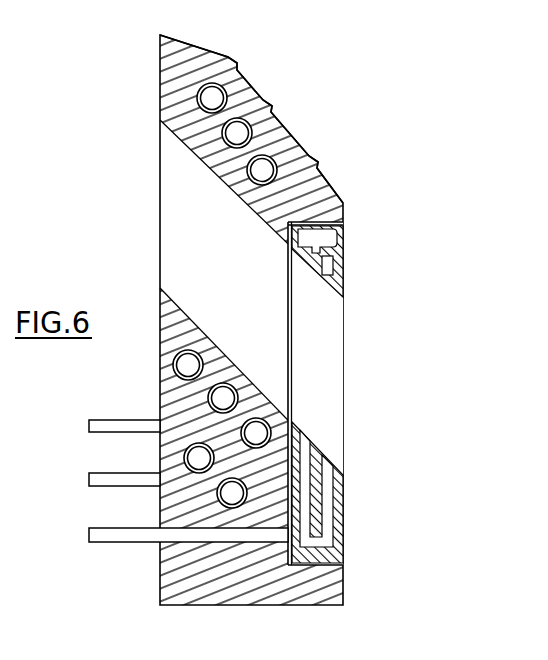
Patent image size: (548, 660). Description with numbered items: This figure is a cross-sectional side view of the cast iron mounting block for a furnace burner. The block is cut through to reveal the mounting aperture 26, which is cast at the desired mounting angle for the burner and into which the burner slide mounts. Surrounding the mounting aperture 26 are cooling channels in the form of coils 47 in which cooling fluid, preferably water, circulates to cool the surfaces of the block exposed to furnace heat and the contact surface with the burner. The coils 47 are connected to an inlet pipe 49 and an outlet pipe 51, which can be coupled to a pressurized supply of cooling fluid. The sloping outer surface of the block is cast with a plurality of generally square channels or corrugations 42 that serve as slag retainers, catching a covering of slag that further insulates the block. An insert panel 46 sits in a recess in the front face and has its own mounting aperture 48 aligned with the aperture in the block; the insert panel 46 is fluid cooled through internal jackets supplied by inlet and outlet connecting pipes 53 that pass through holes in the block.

The mounting aperture 26 is at (186, 238).
The channels or corrugations 42 is at (270, 108).
The insert panel 46 is at (347, 272).
The coils 47 is at (246, 121).
The mounting aperture 48 is at (330, 373).
The inlet pipe 49 is at (99, 420).
The outlet pipe 51 is at (99, 473).
The inlet and outlet connecting pipes 53 is at (120, 542).